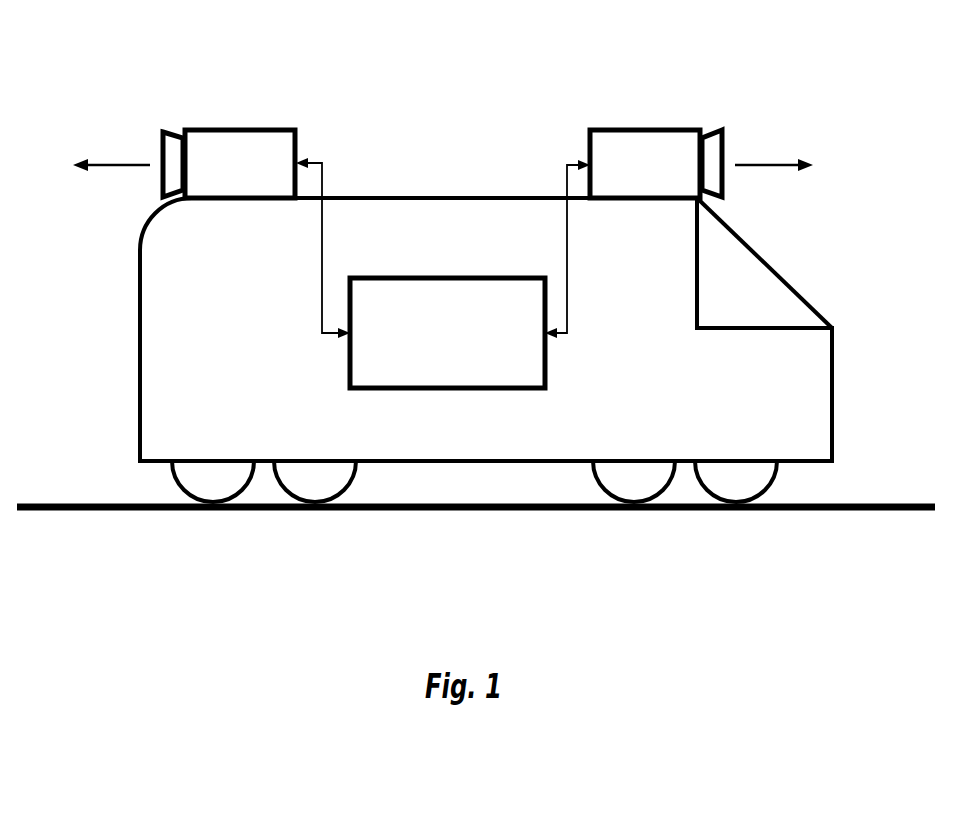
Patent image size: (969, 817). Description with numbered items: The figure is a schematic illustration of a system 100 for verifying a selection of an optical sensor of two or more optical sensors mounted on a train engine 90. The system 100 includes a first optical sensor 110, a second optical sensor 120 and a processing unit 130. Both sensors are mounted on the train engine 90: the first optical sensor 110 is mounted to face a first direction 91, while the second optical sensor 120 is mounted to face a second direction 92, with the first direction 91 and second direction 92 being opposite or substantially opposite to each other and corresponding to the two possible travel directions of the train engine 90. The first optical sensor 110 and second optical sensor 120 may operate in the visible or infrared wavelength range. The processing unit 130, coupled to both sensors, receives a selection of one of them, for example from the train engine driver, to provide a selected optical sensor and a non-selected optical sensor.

The train engine 90 is at (835, 390).
The first direction 91 is at (778, 165).
The second direction 92 is at (108, 165).
The system 100 is at (723, 66).
The first optical sensor 110 is at (640, 130).
The second optical sensor 120 is at (238, 130).
The processing unit 130 is at (372, 389).